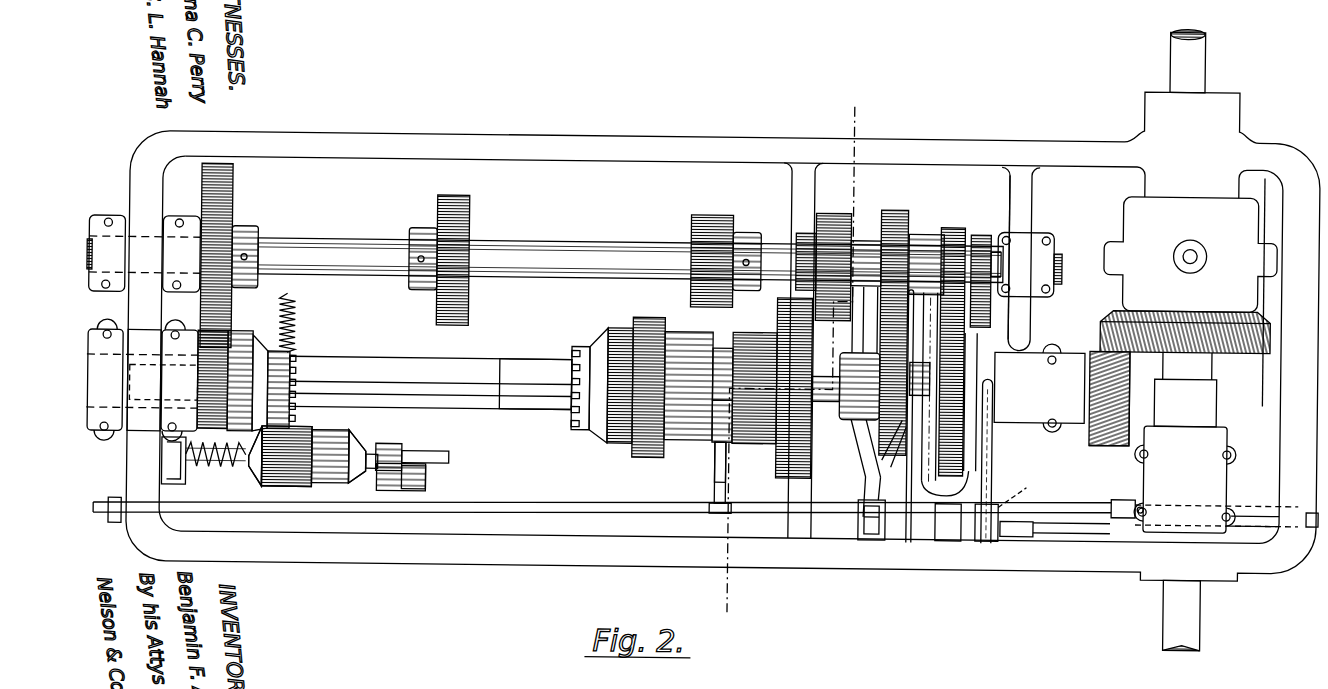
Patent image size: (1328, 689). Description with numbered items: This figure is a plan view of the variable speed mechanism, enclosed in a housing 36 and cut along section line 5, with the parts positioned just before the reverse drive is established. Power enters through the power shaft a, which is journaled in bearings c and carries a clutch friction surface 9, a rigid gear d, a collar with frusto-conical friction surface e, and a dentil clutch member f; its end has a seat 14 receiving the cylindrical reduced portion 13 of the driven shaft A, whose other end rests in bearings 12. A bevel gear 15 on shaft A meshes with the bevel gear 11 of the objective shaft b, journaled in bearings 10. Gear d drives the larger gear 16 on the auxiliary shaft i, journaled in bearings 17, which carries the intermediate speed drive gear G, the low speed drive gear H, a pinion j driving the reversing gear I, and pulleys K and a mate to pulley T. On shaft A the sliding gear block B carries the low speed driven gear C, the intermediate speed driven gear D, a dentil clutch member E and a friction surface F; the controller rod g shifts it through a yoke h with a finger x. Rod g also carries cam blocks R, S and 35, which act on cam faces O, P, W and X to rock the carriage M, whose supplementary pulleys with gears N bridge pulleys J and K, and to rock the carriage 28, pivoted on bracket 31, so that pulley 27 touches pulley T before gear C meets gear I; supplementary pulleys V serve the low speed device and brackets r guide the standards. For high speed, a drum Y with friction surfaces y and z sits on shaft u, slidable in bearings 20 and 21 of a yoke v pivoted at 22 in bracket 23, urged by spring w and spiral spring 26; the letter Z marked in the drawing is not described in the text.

The housing 36 is at (566, 136).
The section line 5— 5 is at (790, 355).
The objective shaft b is at (1198, 61).
The bearings 10 is at (1232, 112).
The bearings 17 is at (175, 227).
The gear 16 is at (229, 206).
The intermediate speed drive gear G is at (470, 218).
The auxiliary shaft i is at (596, 248).
The low speed drive gear H is at (707, 217).
The pinion j is at (800, 240).
The reversing gear I is at (833, 214).
The gear N is at (882, 230).
The pulley K is at (951, 228).
The supplementary pulleys V is at (979, 238).
The pulley 27 is at (1012, 236).
The power shaft a is at (103, 447).
The bearings c is at (140, 352).
The gear d is at (193, 336).
The seat 14 is at (131, 386).
The frusto-conical friction surface e is at (257, 300).
The dentil clutch member f is at (292, 378).
The cylindrical reduced portion 13 is at (296, 387).
The spring w is at (296, 335).
The driven shaft A is at (508, 362).
The bearing 20 is at (176, 492).
The yoke v is at (224, 474).
The spiral spring 26 is at (224, 476).
The frusto-conical friction surface z is at (360, 444).
The frusto-conical friction surface y is at (258, 476).
The drum Y is at (292, 492).
The cone Z is at (343, 489).
The bearing 21 is at (404, 456).
The shaft u is at (438, 459).
The pivot 22 is at (428, 486).
The bracket 23 is at (415, 496).
The convex frusto-conical friction surface 9 is at (108, 530).
The dentil clutch member E is at (572, 398).
The controller rod g is at (538, 447).
The frusto-conical friction surface F is at (600, 434).
The intermediate speed driven gear D is at (644, 460).
The yoke h is at (718, 430).
The finger x is at (716, 472).
The sliding gear block B is at (680, 324).
The low speed driven gear C is at (805, 406).
The pulley J is at (893, 418).
The rocking carriage M is at (876, 490).
The cam face O is at (862, 538).
The brackets r is at (870, 546).
The bracket 31 is at (912, 546).
The cam face P is at (912, 546).
The carriage 28 is at (935, 546).
The cam block 35 is at (955, 546).
The cam face X is at (985, 546).
The cam block S is at (1020, 535).
The cam block R is at (1125, 513).
The cam face W is at (1024, 488).
The pulley T is at (985, 360).
The bearings 12 is at (1060, 422).
The bevel gear 15 is at (1096, 422).
The bevel gear 11 is at (1236, 332).